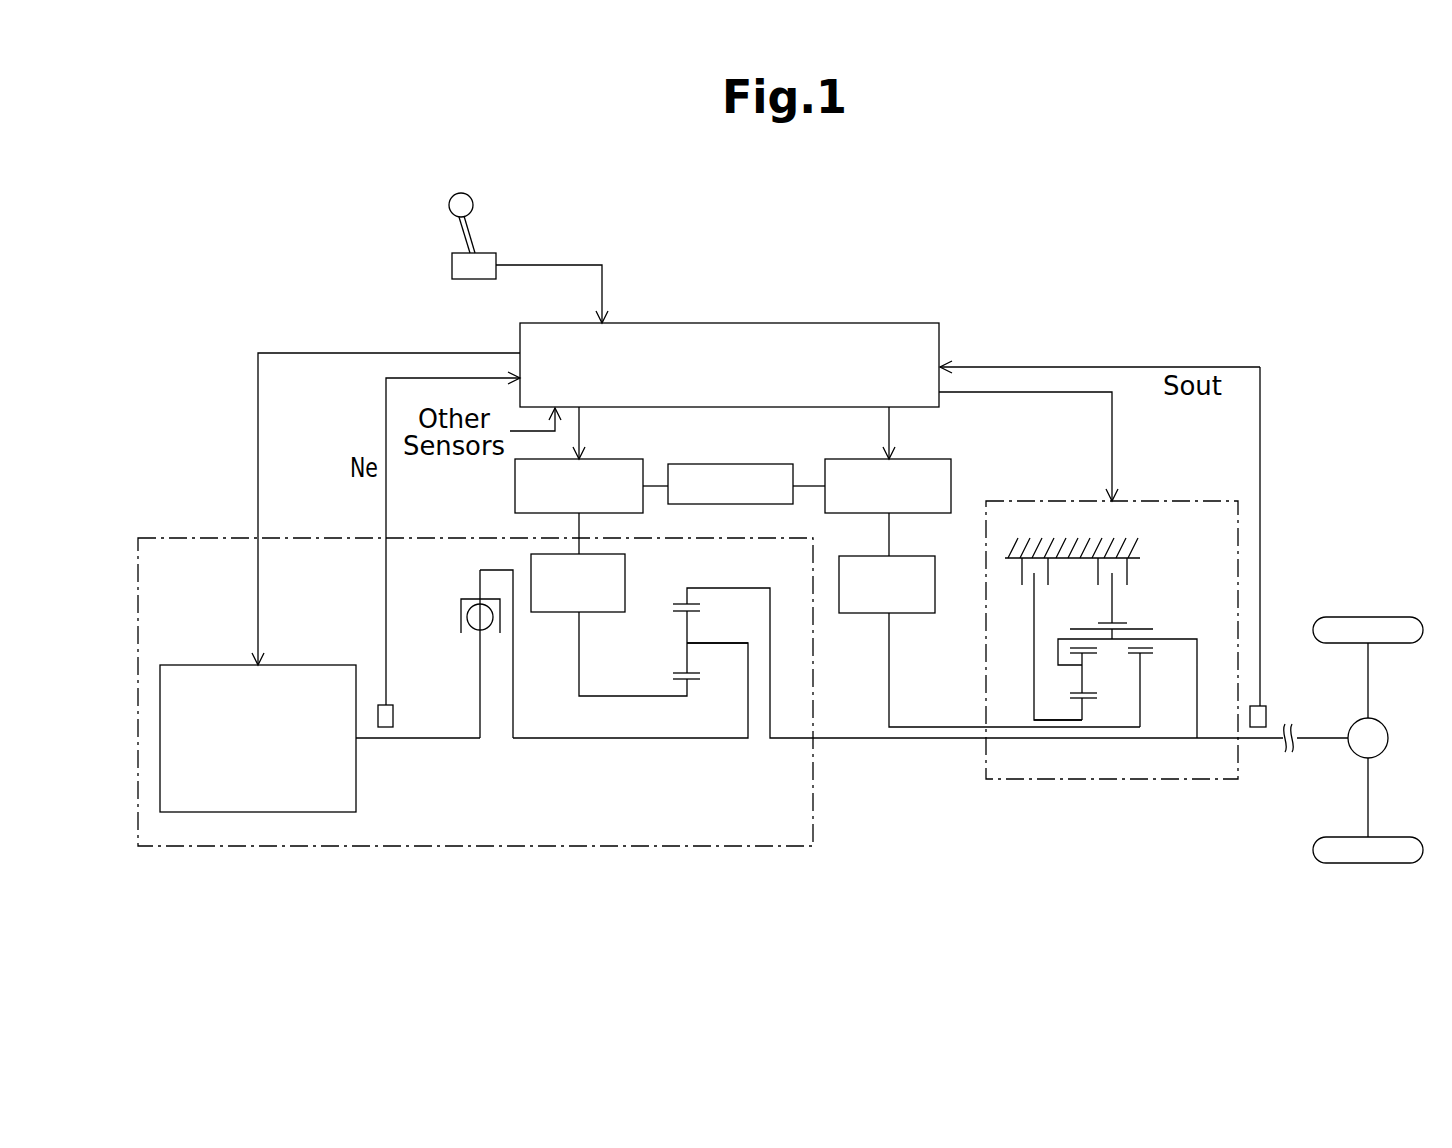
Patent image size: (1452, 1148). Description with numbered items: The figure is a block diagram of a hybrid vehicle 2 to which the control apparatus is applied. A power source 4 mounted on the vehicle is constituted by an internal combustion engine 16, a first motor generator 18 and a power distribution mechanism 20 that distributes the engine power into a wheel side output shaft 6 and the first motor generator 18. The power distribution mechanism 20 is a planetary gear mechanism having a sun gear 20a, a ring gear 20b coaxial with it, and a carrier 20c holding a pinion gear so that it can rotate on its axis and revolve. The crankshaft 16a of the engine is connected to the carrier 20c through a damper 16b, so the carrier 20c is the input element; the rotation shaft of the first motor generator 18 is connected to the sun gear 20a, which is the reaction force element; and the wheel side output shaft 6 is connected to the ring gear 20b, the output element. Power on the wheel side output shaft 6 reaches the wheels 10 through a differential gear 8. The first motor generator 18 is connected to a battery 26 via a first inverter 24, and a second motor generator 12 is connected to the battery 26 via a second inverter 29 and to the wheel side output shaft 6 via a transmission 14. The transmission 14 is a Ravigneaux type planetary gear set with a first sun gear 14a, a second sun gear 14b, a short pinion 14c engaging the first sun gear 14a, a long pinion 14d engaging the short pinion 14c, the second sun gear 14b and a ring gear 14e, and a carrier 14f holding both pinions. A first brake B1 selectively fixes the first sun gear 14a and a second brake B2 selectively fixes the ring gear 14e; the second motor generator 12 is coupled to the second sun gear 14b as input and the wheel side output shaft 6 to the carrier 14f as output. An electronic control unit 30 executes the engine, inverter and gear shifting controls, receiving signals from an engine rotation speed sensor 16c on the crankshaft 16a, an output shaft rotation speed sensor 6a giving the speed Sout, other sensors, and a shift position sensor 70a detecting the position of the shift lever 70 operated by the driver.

The vehicle 2 is at (850, 828).
The power source 4 is at (735, 846).
The wheel side output shaft 6 is at (1275, 745).
The output shaft rotation speed sensor 6a is at (1265, 705).
The differential gear 8 is at (1390, 738).
The wheel 10 is at (1368, 617).
The second motor generator 12 is at (862, 613).
The transmission 14 is at (1112, 680).
The first sun gear 14a is at (1084, 700).
The second sun gear 14b is at (1148, 656).
The short pinion 14c is at (1106, 684).
The long pinion 14d is at (1084, 628).
The ring gear 14e is at (1146, 609).
The carrier 14f is at (1190, 639).
The internal combustion engine 16 is at (337, 665).
The crankshaft 16a is at (445, 738).
The damper 16b is at (462, 597).
The engine rotation speed sensor 16c is at (415, 698).
The first motor generator 18 is at (545, 612).
The power distribution mechanism 20 is at (898, 678).
The sun gear 20a is at (690, 682).
The ring gear 20b is at (681, 601).
The carrier 20c is at (718, 643).
The first inverter 24 is at (620, 459).
The battery 26 is at (745, 464).
The second inverter 29 is at (900, 459).
The electronic control unit 30 is at (757, 323).
The shift lever 70 is at (448, 207).
The shift position sensor 70a is at (452, 266).
The first brake B1 is at (1020, 580).
The second brake B2 is at (1130, 575).